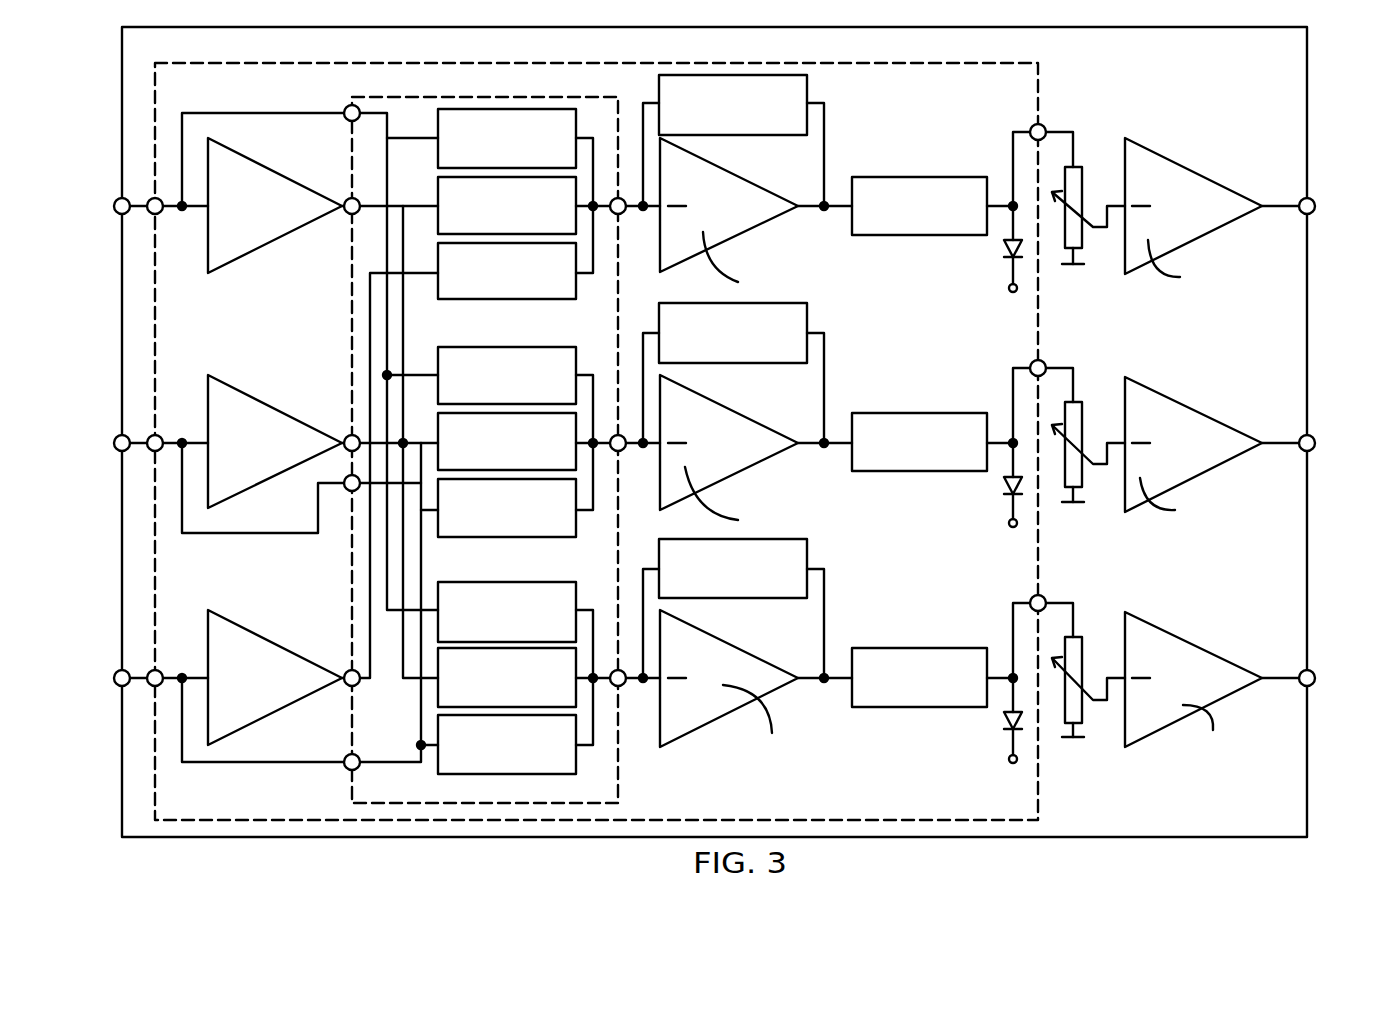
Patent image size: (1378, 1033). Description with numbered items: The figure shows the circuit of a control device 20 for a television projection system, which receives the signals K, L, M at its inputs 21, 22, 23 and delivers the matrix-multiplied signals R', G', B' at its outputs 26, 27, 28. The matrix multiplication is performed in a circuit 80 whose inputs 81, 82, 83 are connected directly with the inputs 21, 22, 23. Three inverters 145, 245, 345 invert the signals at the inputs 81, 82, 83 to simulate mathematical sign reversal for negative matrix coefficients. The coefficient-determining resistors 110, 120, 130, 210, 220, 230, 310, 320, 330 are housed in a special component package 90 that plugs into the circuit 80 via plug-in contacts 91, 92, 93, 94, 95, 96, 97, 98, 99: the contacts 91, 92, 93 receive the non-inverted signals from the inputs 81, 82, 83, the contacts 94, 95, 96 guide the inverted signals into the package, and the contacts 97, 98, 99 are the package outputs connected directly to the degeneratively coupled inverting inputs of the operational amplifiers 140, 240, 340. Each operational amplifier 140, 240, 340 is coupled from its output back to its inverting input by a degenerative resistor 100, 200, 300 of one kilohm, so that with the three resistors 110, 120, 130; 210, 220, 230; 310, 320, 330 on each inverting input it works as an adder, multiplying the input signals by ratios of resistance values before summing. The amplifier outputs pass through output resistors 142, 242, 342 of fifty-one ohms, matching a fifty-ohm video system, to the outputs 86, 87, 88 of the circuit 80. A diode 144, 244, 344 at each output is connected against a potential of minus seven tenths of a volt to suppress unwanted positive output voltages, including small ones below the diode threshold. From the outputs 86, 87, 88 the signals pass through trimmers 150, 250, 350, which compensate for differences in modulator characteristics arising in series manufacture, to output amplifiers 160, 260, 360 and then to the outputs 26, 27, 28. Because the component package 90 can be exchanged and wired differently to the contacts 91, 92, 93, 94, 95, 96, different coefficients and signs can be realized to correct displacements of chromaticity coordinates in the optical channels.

The control device 20 is at (1284, 67).
The input 21 is at (116, 200).
The input 22 is at (116, 437).
The input 23 is at (116, 672).
The output 26 is at (1305, 199).
The output 27 is at (1305, 435).
The output 28 is at (1305, 671).
The circuit 80 is at (1025, 97).
The input 81 is at (190, 210).
The input 82 is at (166, 437).
The input 83 is at (166, 672).
The output 86 is at (1040, 125).
The output 87 is at (1040, 360).
The output 88 is at (1040, 596).
The component package 90 is at (614, 124).
The plug-in contact 91 is at (344, 118).
The plug-in contact 92 is at (346, 489).
The plug-in contact 93 is at (345, 768).
The plug-in contact 94 is at (345, 212).
The plug-in contact 95 is at (345, 437).
The plug-in contact 96 is at (345, 684).
The plug-in contact 97 is at (622, 214).
The plug-in contact 98 is at (622, 451).
The plug-in contact 99 is at (622, 686).
The degenerative resistor 100 is at (808, 88).
The resistor 110 is at (440, 149).
The resistor 120 is at (440, 202).
The resistor 130 is at (448, 300).
The operational amplifier 140 is at (737, 185).
The output resistor 142 is at (870, 182).
The diode 144 is at (1005, 249).
The inverter 145 is at (228, 162).
The trimmer 150 is at (1073, 178).
The output amplifier 160 is at (1157, 173).
The degenerative resistor 200 is at (808, 315).
The resistor 210 is at (500, 348).
The resistor 220 is at (447, 425).
The resistor 230 is at (500, 538).
The operational amplifier 240 is at (703, 410).
The output resistor 242 is at (870, 418).
The diode 244 is at (1005, 487).
The inverter 245 is at (228, 399).
The trimmer 250 is at (1075, 413).
The output amplifier 260 is at (1158, 410).
The degenerative resistor 300 is at (808, 553).
The resistor 310 is at (500, 583).
The resistor 320 is at (448, 687).
The resistor 330 is at (500, 775).
The operational amplifier 340 is at (703, 645).
The output resistor 342 is at (870, 653).
The diode 344 is at (1005, 722).
The inverter 345 is at (228, 634).
The trimmer 350 is at (1075, 648).
The output amplifier 360 is at (1158, 645).